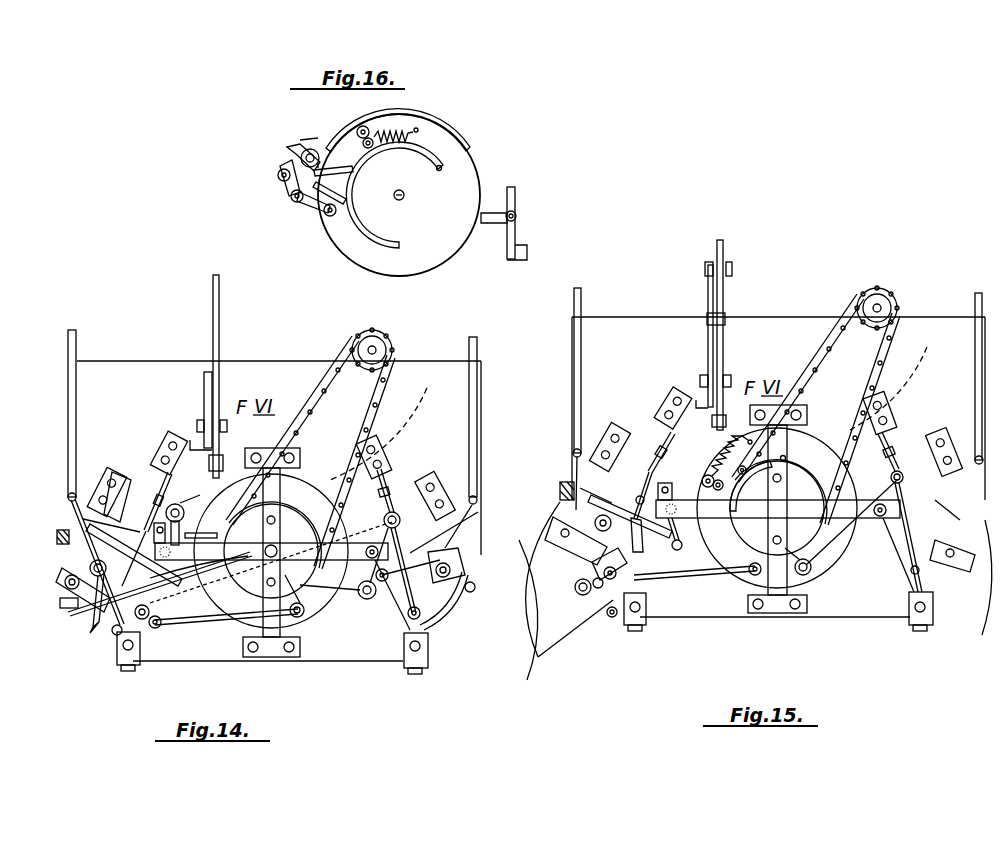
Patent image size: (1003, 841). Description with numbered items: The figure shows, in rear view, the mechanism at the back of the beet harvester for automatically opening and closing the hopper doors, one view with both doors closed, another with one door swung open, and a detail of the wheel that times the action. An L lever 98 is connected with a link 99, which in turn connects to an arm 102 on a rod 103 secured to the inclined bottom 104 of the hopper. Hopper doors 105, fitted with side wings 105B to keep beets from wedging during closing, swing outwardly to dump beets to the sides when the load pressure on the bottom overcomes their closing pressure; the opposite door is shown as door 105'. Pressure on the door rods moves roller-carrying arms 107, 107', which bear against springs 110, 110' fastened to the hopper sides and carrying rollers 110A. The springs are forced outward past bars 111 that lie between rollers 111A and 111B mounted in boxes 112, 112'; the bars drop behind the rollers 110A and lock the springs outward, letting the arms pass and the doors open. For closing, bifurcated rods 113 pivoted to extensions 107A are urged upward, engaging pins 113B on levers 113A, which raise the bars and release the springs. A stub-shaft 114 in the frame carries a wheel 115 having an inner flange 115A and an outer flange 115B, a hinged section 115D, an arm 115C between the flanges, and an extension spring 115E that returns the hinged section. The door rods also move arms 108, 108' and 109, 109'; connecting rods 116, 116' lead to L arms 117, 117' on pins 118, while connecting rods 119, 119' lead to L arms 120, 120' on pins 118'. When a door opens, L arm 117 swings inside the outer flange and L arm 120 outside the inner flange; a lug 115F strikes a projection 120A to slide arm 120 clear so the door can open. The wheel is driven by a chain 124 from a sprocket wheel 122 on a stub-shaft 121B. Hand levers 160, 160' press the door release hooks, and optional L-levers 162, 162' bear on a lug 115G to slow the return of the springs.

In FIG. 14, the L lever 98 is at (216, 345).
In FIG. 15, the L lever 98 is at (722, 314).
In FIG. 14, the link 99 is at (246, 462).
In FIG. 14, the arm 102 is at (268, 562).
In FIG. 14, the rod 103 is at (277, 528).
In FIG. 14, the inclined bottom 104 is at (387, 423).
In FIG. 15, the inclined bottom 104 is at (898, 378).
In FIG. 14, the hopper door 105 is at (55, 556).
In FIG. 15, the hopper door 105 is at (558, 602).
In FIG. 15, the side wing 105B is at (558, 636).
In FIG. 14, the right guide arc 105' is at (501, 610).
In FIG. 15, the right guide arc 105' is at (975, 589).
In FIG. 14, the arm 107 is at (130, 577).
In FIG. 15, the arm 107 is at (574, 594).
In FIG. 14, the extension 107A is at (136, 616).
In FIG. 15, the extension 107A is at (609, 618).
In FIG. 14, the arm 107' is at (347, 602).
In FIG. 14, the arm 108 is at (100, 649).
In FIG. 14, the arm 108' is at (443, 652).
In FIG. 15, the arm 108' is at (946, 611).
In FIG. 14, the arm 109 is at (97, 680).
In FIG. 15, the arm 109 is at (904, 584).
In FIG. 14, the arm 109' is at (446, 683).
In FIG. 14, the spring 110 is at (147, 453).
In FIG. 15, the spring 110 is at (654, 408).
In FIG. 14, the roller 110A is at (95, 582).
In FIG. 15, the roller 110A is at (562, 528).
In FIG. 14, the spring 110' is at (397, 454).
In FIG. 15, the spring 110' is at (906, 412).
In FIG. 14, the bar 111 is at (106, 484).
In FIG. 15, the bar 111 is at (650, 462).
In FIG. 14, the roller 111A is at (98, 521).
In FIG. 15, the roller 111A is at (598, 490).
In FIG. 14, the roller 111B is at (100, 604).
In FIG. 15, the roller 111B is at (560, 496).
In FIG. 14, the box 112 is at (81, 492).
In FIG. 15, the box 112 is at (608, 438).
In FIG. 14, the box 112' is at (446, 489).
In FIG. 15, the box 112' is at (956, 443).
In FIG. 14, the bifurcated rod 113 is at (98, 620).
In FIG. 15, the bifurcated rod 113 is at (598, 572).
In FIG. 14, the link (lever) 113A is at (135, 497).
In FIG. 15, the link (lever) 113A is at (630, 508).
In FIG. 14, the pin 113B is at (134, 529).
In FIG. 15, the pin 113B is at (645, 481).
In FIG. 16, the stub-shaft 114 is at (405, 195).
In FIG. 16, the wheel 115 is at (348, 237).
In FIG. 14, the wheel 115 is at (306, 494).
In FIG. 15, the wheel 115 is at (812, 440).
In FIG. 16, the inner flange 115A is at (372, 236).
In FIG. 16, the outer flange 115B is at (378, 118).
In FIG. 15, the outer flange 115B is at (747, 440).
In FIG. 16, the arm 115C is at (350, 172).
In FIG. 14, the arm 115C is at (214, 534).
In FIG. 16, the hinged section 115D is at (312, 140).
In FIG. 14, the hinged section 115D is at (186, 500).
In FIG. 15, the hinged section 115D is at (700, 489).
In FIG. 16, the extension spring 115E is at (396, 135).
In FIG. 15, the extension spring 115E is at (716, 470).
In FIG. 16, the lug 115F is at (444, 168).
In FIG. 15, the lug 115F is at (790, 462).
In FIG. 16, the lug 115G is at (346, 204).
In FIG. 14, the connecting rod 116 is at (160, 584).
In FIG. 15, the connecting rod 116 is at (697, 588).
In FIG. 14, the connecting rod 116' is at (414, 565).
In FIG. 16, the L arm 117 is at (292, 206).
In FIG. 14, the L arm 117 is at (199, 575).
In FIG. 14, the L arm 117' is at (370, 494).
In FIG. 15, the L arm 117' is at (878, 460).
In FIG. 14, the pin 118 is at (258, 514).
In FIG. 14, the pin 118' is at (243, 596).
In FIG. 15, the pin 118' is at (807, 511).
In FIG. 14, the connecting rod 119 is at (204, 653).
In FIG. 15, the connecting rod 119 is at (642, 628).
In FIG. 14, the connecting rod 119' is at (373, 603).
In FIG. 15, the connecting rod 119' is at (896, 571).
In FIG. 14, the L arm 120 is at (271, 551).
In FIG. 15, the L arm 120 is at (777, 508).
In FIG. 14, the projection 120A is at (300, 602).
In FIG. 15, the projection 120A is at (810, 575).
In FIG. 14, the L arm 120' is at (314, 503).
In FIG. 14, the stub-shaft 121B is at (367, 346).
In FIG. 15, the stub-shaft 121B is at (875, 300).
In FIG. 14, the sprocket wheel 122 is at (385, 344).
In FIG. 15, the sprocket wheel 122 is at (883, 296).
In FIG. 14, the chain 124 is at (344, 363).
In FIG. 15, the chain 124 is at (853, 314).
In FIG. 14, the hand lever 160 is at (72, 399).
In FIG. 15, the hand lever 160 is at (593, 383).
In FIG. 14, the hand lever 160' is at (473, 407).
In FIG. 15, the hand lever 160' is at (969, 365).
In FIG. 16, the L-lever 162 is at (276, 173).
In FIG. 16, the L-lever 162' is at (493, 232).